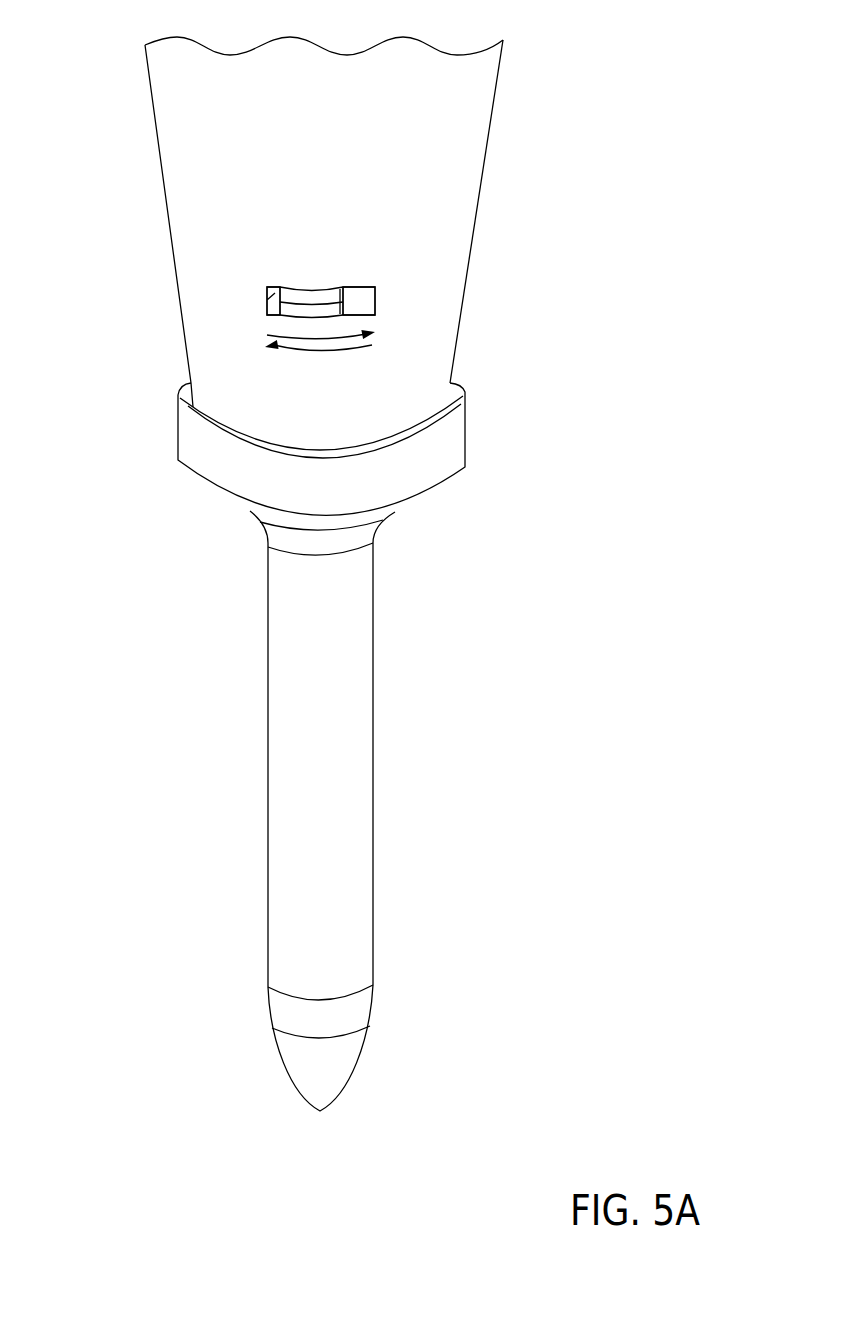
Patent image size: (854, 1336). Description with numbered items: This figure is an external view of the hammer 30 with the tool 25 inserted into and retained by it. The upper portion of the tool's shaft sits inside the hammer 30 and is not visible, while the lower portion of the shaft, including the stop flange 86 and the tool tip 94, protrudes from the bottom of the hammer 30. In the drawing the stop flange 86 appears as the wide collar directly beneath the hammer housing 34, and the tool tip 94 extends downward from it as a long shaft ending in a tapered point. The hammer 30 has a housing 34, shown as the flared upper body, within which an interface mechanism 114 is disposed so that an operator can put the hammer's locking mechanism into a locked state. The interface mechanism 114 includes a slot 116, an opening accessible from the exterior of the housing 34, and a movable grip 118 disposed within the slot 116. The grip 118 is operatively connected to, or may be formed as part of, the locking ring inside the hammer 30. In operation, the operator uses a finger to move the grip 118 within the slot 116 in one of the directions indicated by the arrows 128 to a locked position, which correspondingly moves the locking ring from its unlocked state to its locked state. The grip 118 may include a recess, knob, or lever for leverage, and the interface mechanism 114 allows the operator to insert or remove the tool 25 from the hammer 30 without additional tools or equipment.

The hammer 30 is at (143, 153).
The housing 34 is at (447, 142).
The interface mechanism 114 is at (318, 262).
The slot 116 is at (288, 307).
The grip 118 is at (355, 302).
The arrows 128 is at (320, 356).
The tool 25 is at (206, 734).
The stop flange 86 is at (255, 510).
The tool tip 94 is at (353, 825).